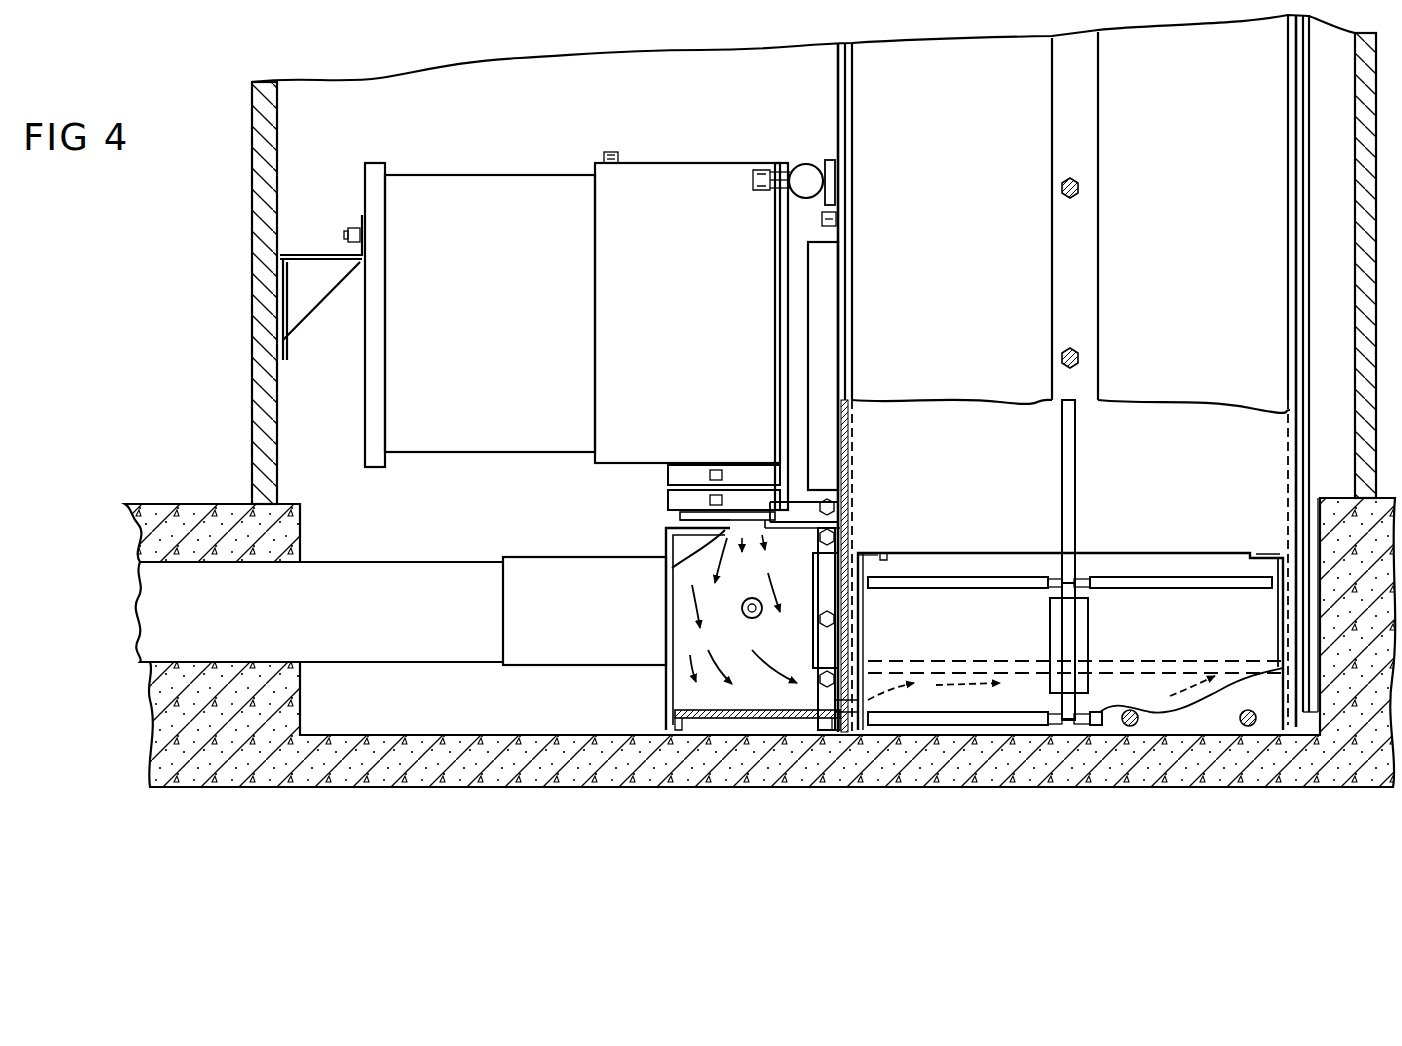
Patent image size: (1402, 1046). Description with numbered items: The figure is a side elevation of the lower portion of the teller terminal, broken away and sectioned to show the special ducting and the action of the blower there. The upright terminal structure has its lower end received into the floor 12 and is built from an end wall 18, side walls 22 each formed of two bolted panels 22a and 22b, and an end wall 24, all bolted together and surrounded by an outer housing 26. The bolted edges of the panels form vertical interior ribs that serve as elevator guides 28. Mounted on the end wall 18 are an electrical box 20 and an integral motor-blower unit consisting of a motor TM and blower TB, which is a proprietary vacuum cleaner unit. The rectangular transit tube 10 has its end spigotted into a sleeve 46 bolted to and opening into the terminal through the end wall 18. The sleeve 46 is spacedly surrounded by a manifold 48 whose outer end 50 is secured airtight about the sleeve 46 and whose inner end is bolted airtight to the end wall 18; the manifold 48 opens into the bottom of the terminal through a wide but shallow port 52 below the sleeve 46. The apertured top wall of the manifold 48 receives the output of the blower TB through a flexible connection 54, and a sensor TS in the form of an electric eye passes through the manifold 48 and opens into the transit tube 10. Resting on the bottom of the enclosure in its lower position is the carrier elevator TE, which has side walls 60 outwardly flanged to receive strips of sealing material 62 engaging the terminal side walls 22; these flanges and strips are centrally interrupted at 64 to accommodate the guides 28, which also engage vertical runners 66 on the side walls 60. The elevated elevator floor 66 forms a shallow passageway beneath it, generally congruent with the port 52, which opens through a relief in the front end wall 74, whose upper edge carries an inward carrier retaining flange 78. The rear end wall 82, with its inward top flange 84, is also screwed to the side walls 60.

The transit tube 10 is at (392, 655).
The floor 12 is at (193, 503).
The end wall 18 is at (855, 98).
The electrical box 20 is at (828, 340).
The side wall 22 is at (1292, 455).
The panel 22a is at (988, 392).
The panel 22b is at (1172, 400).
The end wall 24 is at (1312, 207).
The outer housing 26 is at (250, 370).
The elevator guide 28 is at (1078, 476).
The sleeve 46 is at (567, 662).
The manifold 48 is at (838, 494).
The outer end 50 is at (666, 603).
The port 52 is at (826, 702).
The flexible connection 54 is at (668, 492).
The side wall 60 is at (985, 551).
The sealing material strip 62 is at (928, 586).
The interruption 64 is at (1075, 578).
The floor 66 is at (945, 660).
The front end wall 74 is at (866, 630).
The carrier retaining flange 78 is at (870, 551).
The rear end wall 82 is at (1275, 641).
The top flange 84 is at (1268, 553).
The motor TM is at (437, 315).
The blower TB is at (715, 331).
The sensor TS is at (758, 618).
The carrier elevator TE is at (1191, 661).